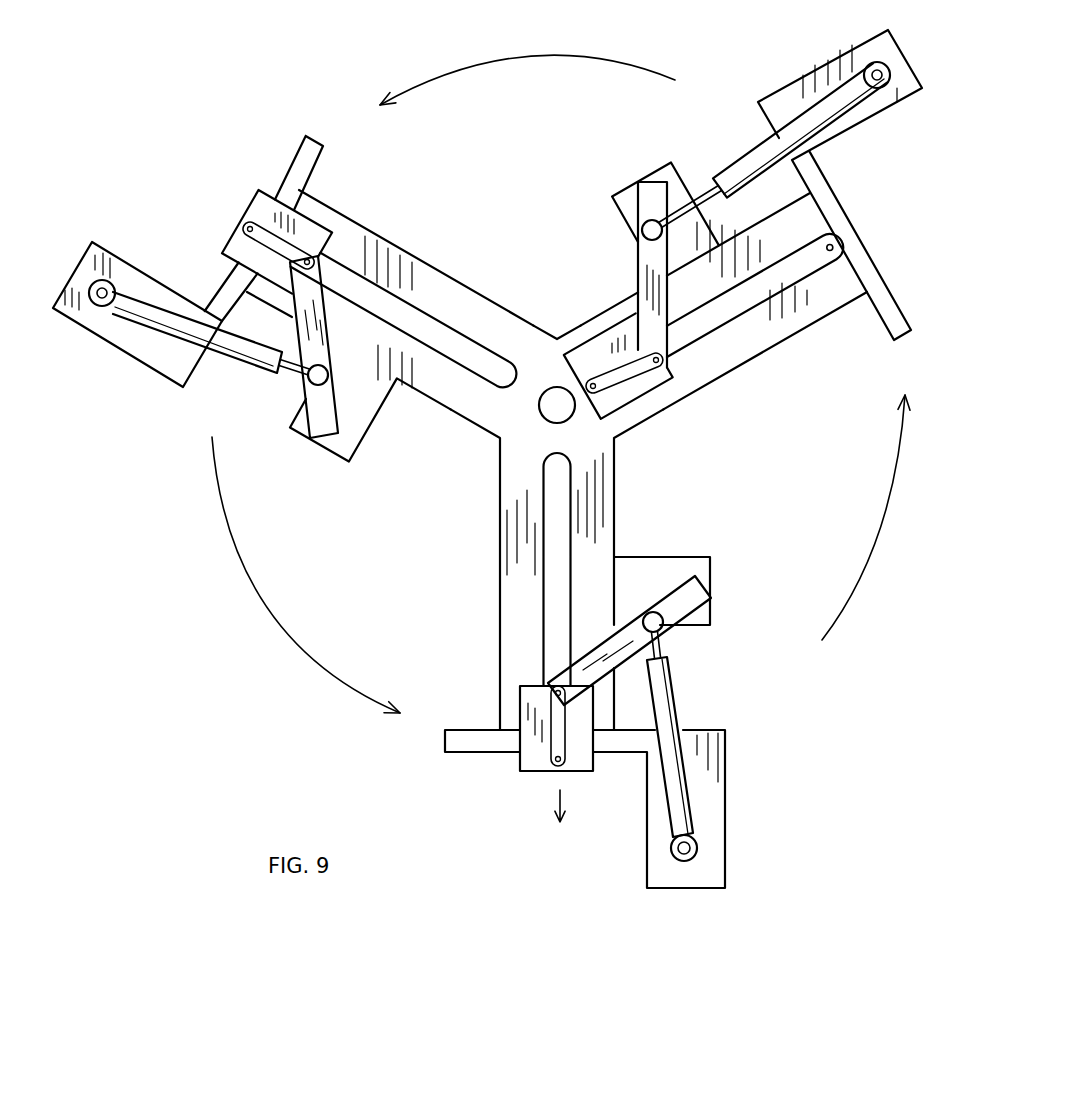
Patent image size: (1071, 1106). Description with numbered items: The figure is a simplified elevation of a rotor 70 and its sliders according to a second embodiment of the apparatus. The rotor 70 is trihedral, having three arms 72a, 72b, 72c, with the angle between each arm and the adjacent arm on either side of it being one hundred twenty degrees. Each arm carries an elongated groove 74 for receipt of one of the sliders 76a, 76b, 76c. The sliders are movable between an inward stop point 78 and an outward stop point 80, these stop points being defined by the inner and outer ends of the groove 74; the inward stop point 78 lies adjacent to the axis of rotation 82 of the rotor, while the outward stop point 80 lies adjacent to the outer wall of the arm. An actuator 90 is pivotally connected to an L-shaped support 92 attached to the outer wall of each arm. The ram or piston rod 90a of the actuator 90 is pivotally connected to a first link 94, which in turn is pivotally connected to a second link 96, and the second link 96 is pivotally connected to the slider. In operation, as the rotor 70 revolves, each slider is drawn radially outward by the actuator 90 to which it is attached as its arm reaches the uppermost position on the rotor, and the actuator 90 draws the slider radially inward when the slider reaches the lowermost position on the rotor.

The rotor 70 is at (371, 62).
The arm 72a is at (428, 266).
The arm 72b is at (614, 510).
The arm 72c is at (752, 368).
The elongated groove 74 is at (442, 320).
The slider 76a is at (250, 203).
The slider 76b is at (520, 700).
The slider 76c is at (639, 413).
The inward stop point 78 is at (528, 378).
The outward stop point 80 is at (833, 247).
The axis of rotation 82 is at (542, 416).
The actuator 90 is at (148, 293).
The piston rod 90a is at (293, 378).
The L-shaped support 92 is at (112, 352).
The first link 94 is at (662, 264).
The second link 96 is at (610, 372).